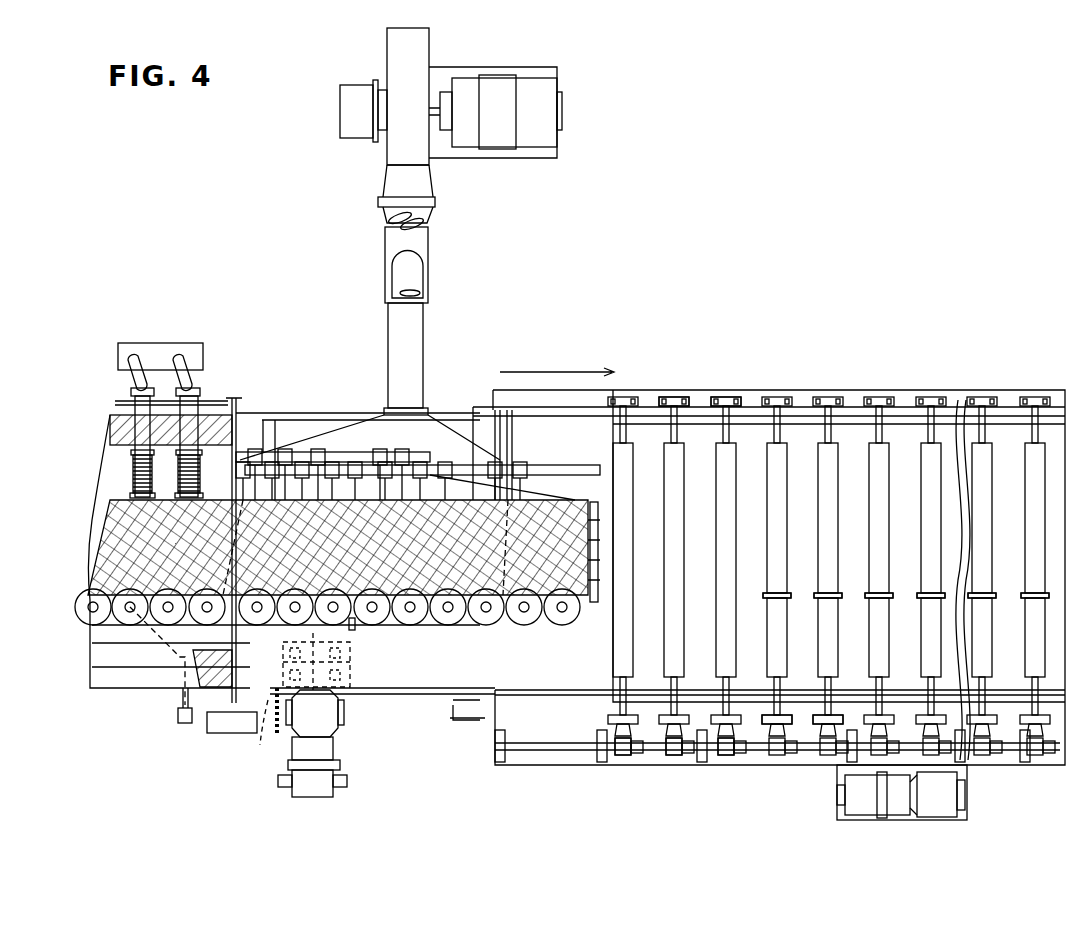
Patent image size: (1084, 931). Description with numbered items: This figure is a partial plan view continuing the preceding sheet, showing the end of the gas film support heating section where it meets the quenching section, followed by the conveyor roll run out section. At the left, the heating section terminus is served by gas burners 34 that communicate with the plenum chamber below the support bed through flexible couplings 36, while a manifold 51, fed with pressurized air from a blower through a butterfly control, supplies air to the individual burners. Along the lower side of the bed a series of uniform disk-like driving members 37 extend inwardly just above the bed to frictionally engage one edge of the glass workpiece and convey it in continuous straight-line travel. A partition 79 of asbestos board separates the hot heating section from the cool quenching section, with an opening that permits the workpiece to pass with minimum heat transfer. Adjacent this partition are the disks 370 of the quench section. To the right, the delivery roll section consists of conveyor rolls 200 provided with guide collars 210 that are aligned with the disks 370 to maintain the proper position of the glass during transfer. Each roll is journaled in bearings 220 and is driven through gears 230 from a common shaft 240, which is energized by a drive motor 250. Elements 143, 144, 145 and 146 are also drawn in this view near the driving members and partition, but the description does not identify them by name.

The gas burner 34 is at (120, 430).
The flexible coupling 36 is at (150, 482).
The driving member 37 is at (200, 623).
The manifold 51 is at (199, 343).
The partition 79 is at (228, 670).
The wire mesh belt 143 is at (108, 586).
The switch 144 is at (180, 724).
The control box 145 is at (270, 703).
The drive motor gearbox 146 is at (338, 750).
The conveyor roll 200 is at (935, 480).
The guide collar 210 is at (935, 596).
The bearing 220 is at (727, 397).
The gear 230 is at (724, 752).
The common shaft 240 is at (570, 752).
The drive motor 250 is at (853, 795).
The disk 370 is at (340, 626).